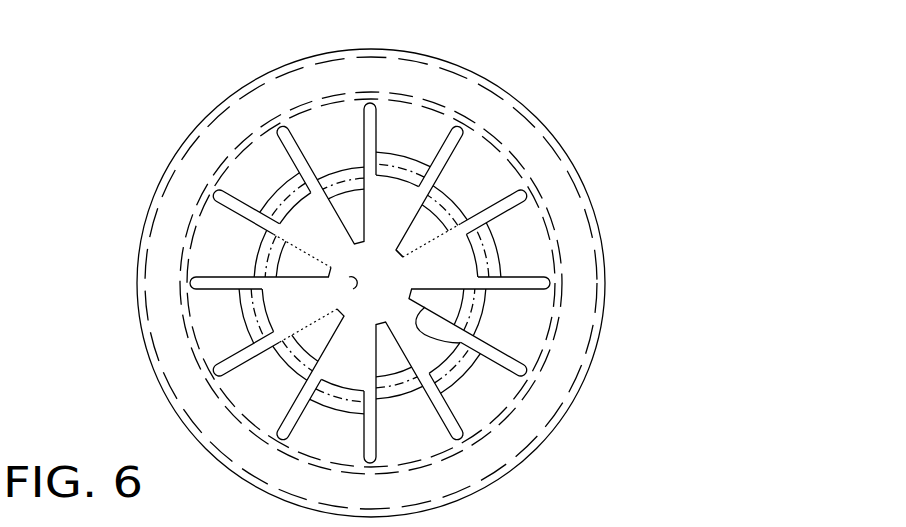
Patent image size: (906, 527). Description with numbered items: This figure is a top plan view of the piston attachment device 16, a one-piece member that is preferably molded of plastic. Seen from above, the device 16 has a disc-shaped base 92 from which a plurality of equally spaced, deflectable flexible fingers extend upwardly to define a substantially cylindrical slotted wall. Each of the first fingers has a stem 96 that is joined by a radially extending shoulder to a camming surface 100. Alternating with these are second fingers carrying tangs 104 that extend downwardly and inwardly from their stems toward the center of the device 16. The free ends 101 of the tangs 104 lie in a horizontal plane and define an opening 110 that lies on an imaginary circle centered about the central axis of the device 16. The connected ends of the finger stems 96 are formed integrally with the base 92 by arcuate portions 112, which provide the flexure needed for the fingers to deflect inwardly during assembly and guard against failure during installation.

The piston attachment device 16 is at (507, 91).
The base 92 is at (527, 155).
The stem 96 is at (255, 383).
The camming surface 100 is at (493, 253).
The free ends 101 is at (402, 254).
The tangs 104 is at (460, 343).
The opening 110 is at (348, 281).
The arcuate portions 112 is at (323, 156).